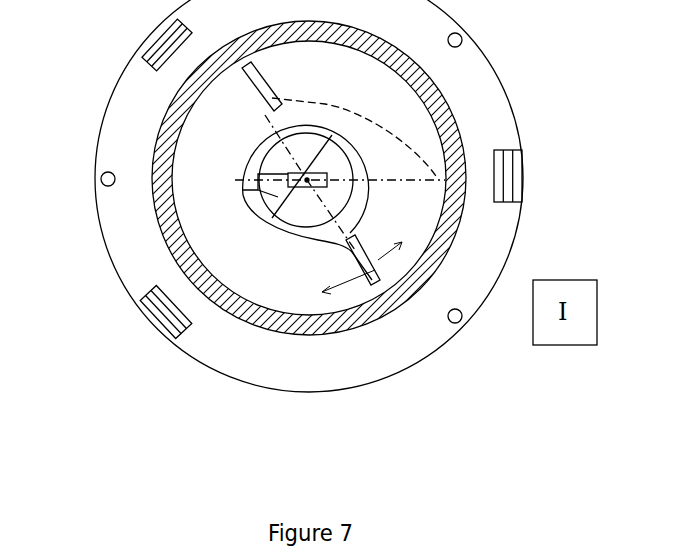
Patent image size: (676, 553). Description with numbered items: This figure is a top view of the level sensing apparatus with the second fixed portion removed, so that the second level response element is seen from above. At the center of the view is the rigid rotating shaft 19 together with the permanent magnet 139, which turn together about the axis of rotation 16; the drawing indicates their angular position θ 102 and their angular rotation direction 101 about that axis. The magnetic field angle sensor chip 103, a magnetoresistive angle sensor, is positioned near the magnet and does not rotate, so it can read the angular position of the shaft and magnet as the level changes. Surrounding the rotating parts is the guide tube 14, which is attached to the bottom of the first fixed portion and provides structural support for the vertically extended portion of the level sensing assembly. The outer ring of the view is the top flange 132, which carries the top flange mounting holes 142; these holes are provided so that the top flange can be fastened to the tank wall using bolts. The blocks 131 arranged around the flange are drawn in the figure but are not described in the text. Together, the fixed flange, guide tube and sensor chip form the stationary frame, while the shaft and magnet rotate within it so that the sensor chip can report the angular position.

The top flange 132 is at (307, 375).
The guide tube 14 is at (163, 237).
The mounting block 131 is at (155, 50).
The top flange mounting holes 142 is at (101, 180).
The magnetic field angle sensor chip 103 is at (357, 186).
The rigid rotating shaft 19 is at (252, 98).
The angular position θ 102 is at (354, 132).
The axis of rotation 16 is at (242, 188).
The permanent magnet 139 is at (245, 212).
The angular rotation direction 101 is at (338, 277).